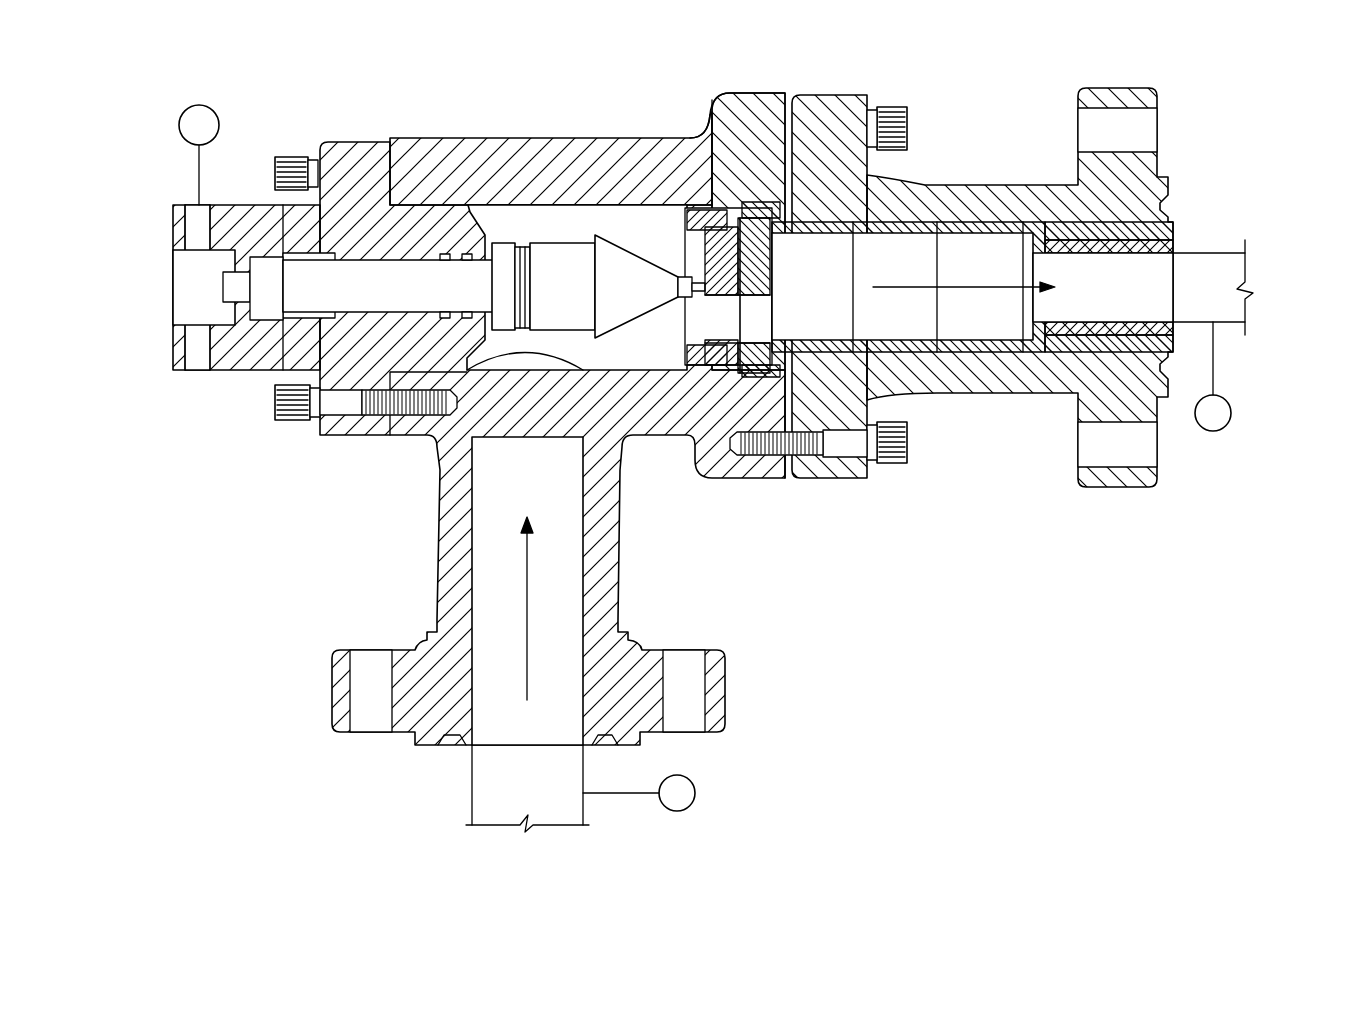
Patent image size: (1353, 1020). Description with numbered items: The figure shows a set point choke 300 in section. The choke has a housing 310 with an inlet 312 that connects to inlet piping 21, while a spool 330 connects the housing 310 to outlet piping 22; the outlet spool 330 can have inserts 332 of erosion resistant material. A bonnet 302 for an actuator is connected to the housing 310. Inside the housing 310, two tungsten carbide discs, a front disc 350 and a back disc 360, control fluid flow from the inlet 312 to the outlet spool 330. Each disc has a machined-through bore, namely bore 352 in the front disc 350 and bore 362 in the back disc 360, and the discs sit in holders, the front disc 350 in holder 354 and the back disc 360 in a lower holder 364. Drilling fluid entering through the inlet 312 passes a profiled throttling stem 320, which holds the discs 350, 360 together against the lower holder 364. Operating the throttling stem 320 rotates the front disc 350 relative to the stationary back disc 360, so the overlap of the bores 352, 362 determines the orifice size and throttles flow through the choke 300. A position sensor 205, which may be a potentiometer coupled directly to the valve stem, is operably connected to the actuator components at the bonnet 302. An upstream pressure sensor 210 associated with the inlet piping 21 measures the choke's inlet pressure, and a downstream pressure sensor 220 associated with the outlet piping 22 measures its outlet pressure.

The set point choke 300 is at (283, 73).
The position sensor 205 is at (181, 121).
The upstream pressure sensor 210 is at (696, 793).
The downstream pressure sensor 220 is at (1247, 391).
The inlet piping 21 is at (470, 783).
The outlet piping 22 is at (1210, 252).
The bonnet 302 is at (355, 436).
The housing 310 is at (430, 138).
The inlet 312 is at (462, 545).
The profiled throttling stem 320 is at (566, 243).
The spool 330 is at (980, 184).
The inserts 332 is at (986, 347).
The front disc 350 is at (705, 258).
The bore 352 is at (722, 343).
The holder 354 is at (687, 357).
The back disc 360 is at (772, 260).
The bore 362 is at (755, 297).
The lower holder 364 is at (737, 202).